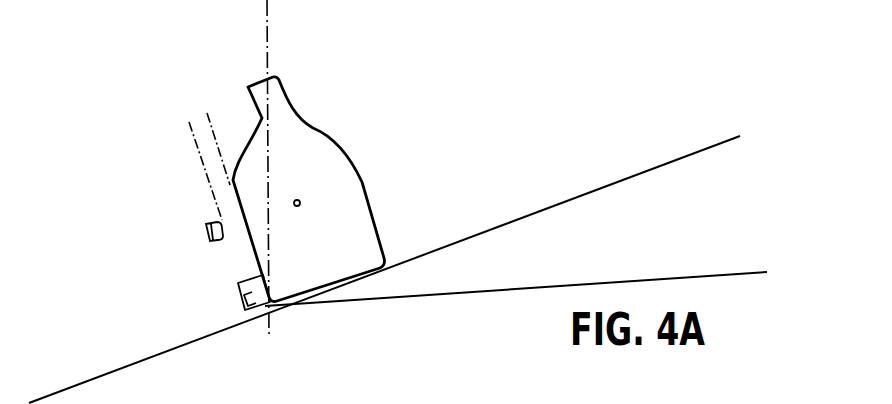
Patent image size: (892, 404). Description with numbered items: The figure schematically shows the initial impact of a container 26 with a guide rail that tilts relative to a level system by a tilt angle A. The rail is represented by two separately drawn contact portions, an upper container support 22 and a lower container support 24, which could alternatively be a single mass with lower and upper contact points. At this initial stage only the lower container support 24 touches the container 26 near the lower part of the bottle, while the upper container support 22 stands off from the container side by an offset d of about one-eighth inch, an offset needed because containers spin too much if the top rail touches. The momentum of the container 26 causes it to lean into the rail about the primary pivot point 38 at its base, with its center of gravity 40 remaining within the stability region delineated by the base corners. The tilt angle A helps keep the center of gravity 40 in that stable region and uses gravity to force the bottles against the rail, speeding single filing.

The upper container support 22 is at (205, 233).
The lower container support 24 is at (247, 282).
The container 26 is at (331, 262).
The primary pivot point 38 is at (267, 315).
The center of gravity 40 is at (303, 203).
The offset d is at (248, 122).
The tilt angle A is at (673, 163).